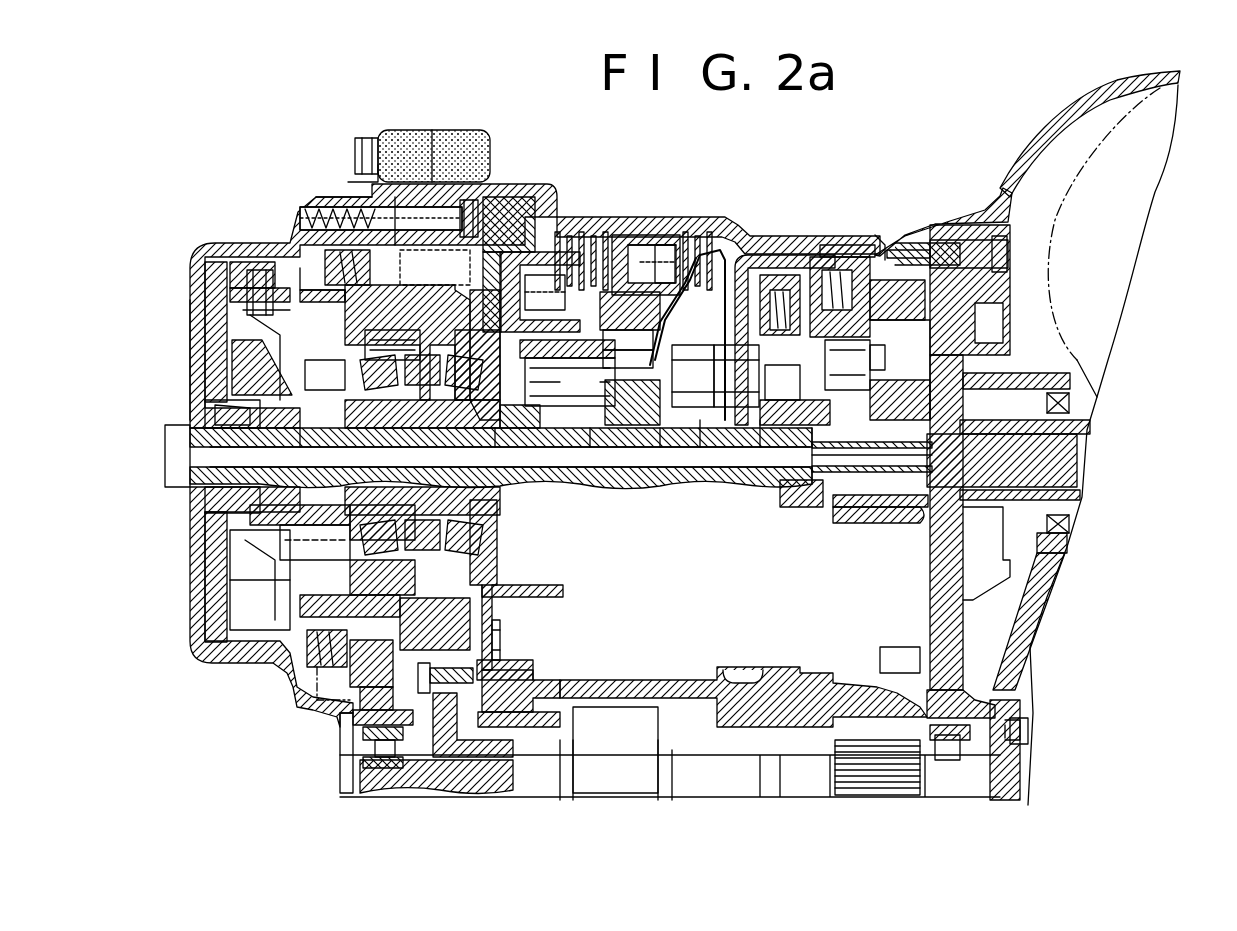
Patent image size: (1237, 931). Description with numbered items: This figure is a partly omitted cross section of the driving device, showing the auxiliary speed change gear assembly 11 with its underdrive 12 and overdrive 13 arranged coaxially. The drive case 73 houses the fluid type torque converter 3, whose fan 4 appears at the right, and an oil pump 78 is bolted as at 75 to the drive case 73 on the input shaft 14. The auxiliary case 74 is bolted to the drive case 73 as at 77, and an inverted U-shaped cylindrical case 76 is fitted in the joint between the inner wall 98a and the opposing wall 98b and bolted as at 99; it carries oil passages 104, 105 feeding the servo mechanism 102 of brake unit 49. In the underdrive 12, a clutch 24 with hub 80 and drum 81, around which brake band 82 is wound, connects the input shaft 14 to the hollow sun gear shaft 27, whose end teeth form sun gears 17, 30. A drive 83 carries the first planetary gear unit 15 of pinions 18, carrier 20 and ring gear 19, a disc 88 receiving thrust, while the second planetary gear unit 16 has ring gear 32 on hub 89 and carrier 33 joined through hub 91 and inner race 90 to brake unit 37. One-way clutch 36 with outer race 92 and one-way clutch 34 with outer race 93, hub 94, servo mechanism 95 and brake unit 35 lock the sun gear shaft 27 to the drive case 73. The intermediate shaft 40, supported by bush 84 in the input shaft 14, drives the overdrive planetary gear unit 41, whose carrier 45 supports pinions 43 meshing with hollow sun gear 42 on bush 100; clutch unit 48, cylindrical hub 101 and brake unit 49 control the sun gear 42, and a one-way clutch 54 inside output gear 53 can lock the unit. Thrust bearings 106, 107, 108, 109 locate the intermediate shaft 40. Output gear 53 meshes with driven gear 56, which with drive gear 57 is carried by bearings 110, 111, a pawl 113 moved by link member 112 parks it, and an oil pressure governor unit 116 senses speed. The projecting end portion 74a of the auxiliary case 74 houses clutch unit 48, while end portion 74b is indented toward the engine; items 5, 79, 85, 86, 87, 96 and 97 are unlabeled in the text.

The fluid type torque converter 3 is at (1037, 125).
The fan 4 is at (1155, 150).
The retainer 5 is at (879, 354).
The auxiliary speed change gear assembly 11 is at (533, 160).
The underdrive 12 is at (770, 232).
The overdrive 13 is at (298, 165).
The input shaft 14 is at (1078, 462).
The first planetary gear unit 15 is at (705, 306).
The second planetary gear unit 16 is at (500, 325).
The sun gear 17 is at (690, 484).
The planetary pinions 18 is at (693, 376).
The ring gear 19 is at (736, 376).
The carrier 20 is at (700, 444).
The clutch 24 is at (828, 245).
The sun gear shaft 27 is at (632, 402).
The sun gear 30 is at (588, 448).
The ring gear 32 is at (477, 375).
The carrier 33 is at (570, 382).
The one-way clutch 34 is at (655, 448).
The brake unit 35 is at (698, 236).
The one-way clutch 36 is at (630, 309).
The brake unit 37 is at (560, 232).
The intermediate shaft 40 is at (595, 484).
The planetary gear unit 41 is at (290, 640).
The sun gear 42 is at (308, 448).
The planetary pinions 43 is at (332, 550).
The carrier 45 is at (422, 500).
The clutch unit 48 is at (262, 272).
The brake unit 49 is at (295, 255).
The output gear 53 is at (407, 342).
The one-way clutch 54 is at (392, 346).
The driven gear 56 is at (385, 620).
The drive gear 57 is at (838, 742).
The drive case 73 is at (1005, 188).
The auxiliary case 74 is at (300, 215).
The end portion of auxiliary case 74a is at (190, 590).
The axially outer end portion 74b is at (340, 778).
The bolt 75 is at (1005, 252).
The cylindrical case 76 is at (398, 200).
The bolt 77 is at (363, 137).
The oil pump 78 is at (1005, 318).
The clutch piston 79 is at (847, 364).
The hub 80 is at (900, 360).
The drum 81 is at (899, 299).
The brake band 82 is at (876, 240).
The drive 83 is at (742, 255).
The bush 84 is at (792, 456).
The shaft section 85 is at (744, 444).
The bearing 86 is at (795, 416).
The spring 87 is at (760, 340).
The disc 88 is at (782, 382).
The hub 89 is at (525, 437).
The inner race 90 is at (567, 344).
The hub 91 is at (540, 292).
The outer race 92 is at (652, 264).
The outer race 93 is at (628, 352).
The hub 94 is at (628, 332).
The servo mechanism 95 is at (662, 245).
The spring 96 is at (640, 245).
The piston 97 is at (620, 236).
The inner wall 98a is at (370, 170).
The resilient mount 98b is at (448, 178).
The bolt 99 is at (509, 264).
The bush 100 is at (510, 457).
The cylindrical hub 101 is at (340, 272).
The servo mechanism 102 is at (397, 263).
The oil passage 104 is at (381, 217).
The oil passage 105 is at (451, 218).
The first thrust bearing 106 is at (212, 412).
The second thrust bearing 107 is at (485, 448).
The third thrust bearing 108 is at (422, 412).
The fourth thrust bearing 109 is at (355, 395).
The bearing 110 is at (365, 745).
The bearing 111 is at (935, 732).
The transmission link member 112 is at (495, 630).
The pawl 113 is at (500, 648).
The oil pressure governor unit 116 is at (658, 725).